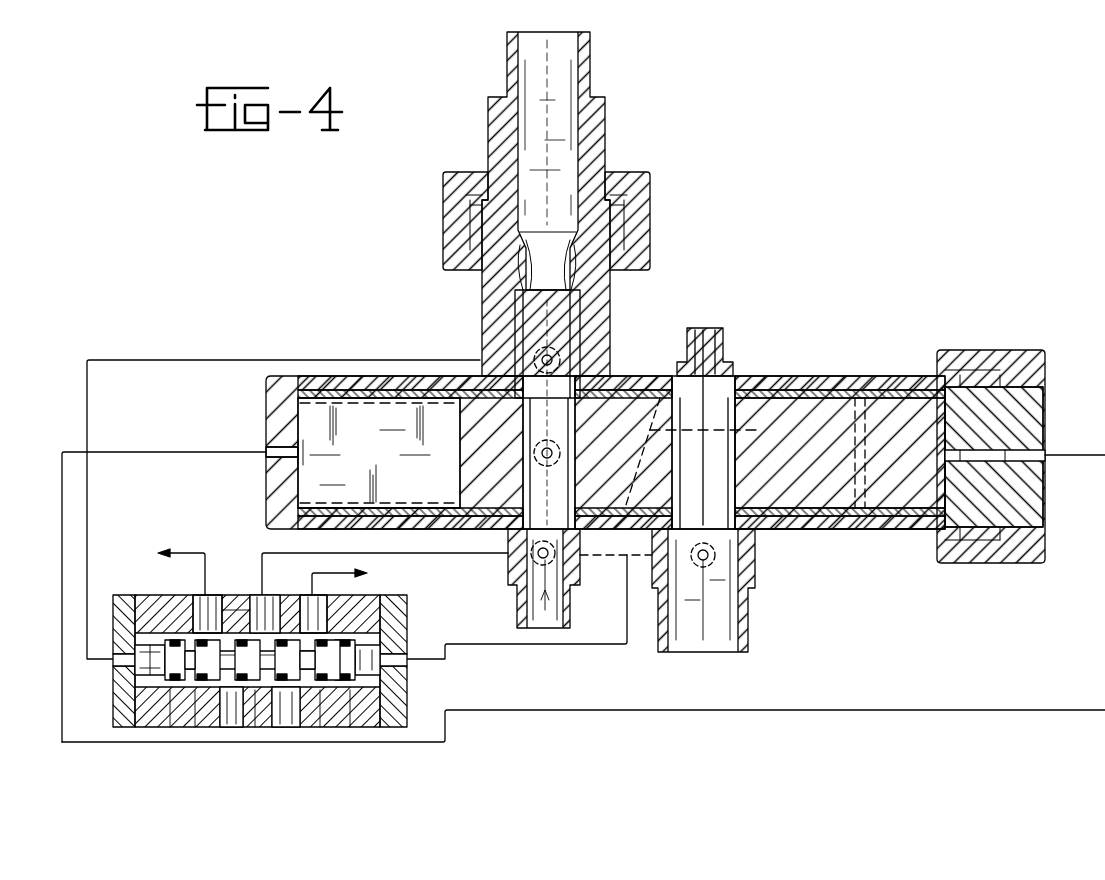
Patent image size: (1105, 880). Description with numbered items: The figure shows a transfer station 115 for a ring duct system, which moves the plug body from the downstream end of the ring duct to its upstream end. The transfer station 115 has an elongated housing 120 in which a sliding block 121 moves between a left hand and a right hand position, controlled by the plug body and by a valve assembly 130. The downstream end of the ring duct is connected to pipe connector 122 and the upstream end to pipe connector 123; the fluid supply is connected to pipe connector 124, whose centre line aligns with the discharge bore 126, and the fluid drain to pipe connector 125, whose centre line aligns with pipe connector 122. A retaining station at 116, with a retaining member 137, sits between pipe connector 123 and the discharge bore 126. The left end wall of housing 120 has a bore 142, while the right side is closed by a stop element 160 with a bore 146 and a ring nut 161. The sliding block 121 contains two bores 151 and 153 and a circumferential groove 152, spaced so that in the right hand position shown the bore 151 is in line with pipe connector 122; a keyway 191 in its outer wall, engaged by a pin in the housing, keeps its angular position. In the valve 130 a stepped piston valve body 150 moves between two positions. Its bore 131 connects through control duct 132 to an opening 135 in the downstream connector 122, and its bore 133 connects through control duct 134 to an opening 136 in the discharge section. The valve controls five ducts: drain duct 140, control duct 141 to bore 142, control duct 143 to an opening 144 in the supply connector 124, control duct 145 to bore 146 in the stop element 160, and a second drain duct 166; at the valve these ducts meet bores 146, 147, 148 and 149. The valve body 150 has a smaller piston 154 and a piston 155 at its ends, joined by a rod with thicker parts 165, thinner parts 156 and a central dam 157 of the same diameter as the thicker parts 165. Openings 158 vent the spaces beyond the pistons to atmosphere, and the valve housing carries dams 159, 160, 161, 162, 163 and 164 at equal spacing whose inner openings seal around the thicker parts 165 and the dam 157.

The transfer station 115 is at (885, 370).
The retaining station 116 is at (655, 236).
The elongated housing 120 is at (405, 518).
The sliding block 121 is at (897, 530).
The pipe connector 122 is at (742, 638).
The pipe connector 123 is at (592, 68).
The pipe connector 124 is at (518, 606).
The pipe connector 125 is at (728, 345).
The discharge bore 126 is at (545, 385).
The valve assembly 130 is at (160, 593).
The bore 131 is at (407, 672).
The control duct 132 is at (541, 645).
The bore 133 is at (113, 662).
The control duct 134 is at (218, 358).
The opening 135 is at (718, 560).
The opening 136 is at (617, 333).
The retaining member 137 is at (481, 290).
The drain duct 140 is at (195, 550).
The control duct 141 is at (195, 455).
The bore 142 is at (273, 433).
The control duct 143 is at (448, 556).
The opening 144 is at (578, 548).
The control duct 145 is at (891, 706).
The bore 146 is at (1047, 450).
The bore 147 is at (238, 690).
The bore 148 is at (275, 595).
The bore 149 is at (258, 675).
The stepped piston valve body 150 is at (247, 595).
The bore 151 is at (788, 372).
The circumferential groove 152 is at (846, 378).
The bore 153 is at (470, 478).
The piston 154 is at (162, 705).
The piston 155 is at (395, 690).
The thinner parts 156 is at (288, 686).
The central dam 157 is at (225, 672).
The openings 158 is at (178, 697).
The dam 159 is at (190, 690).
The stop element 160 is at (1020, 415).
The ring nut 161 is at (975, 350).
The dam 162 is at (292, 595).
The dam 163 is at (322, 595).
The dam 164 is at (308, 690).
The thicker parts 165 is at (204, 696).
The drain duct 166 is at (340, 573).
The keyway 191 is at (633, 376).